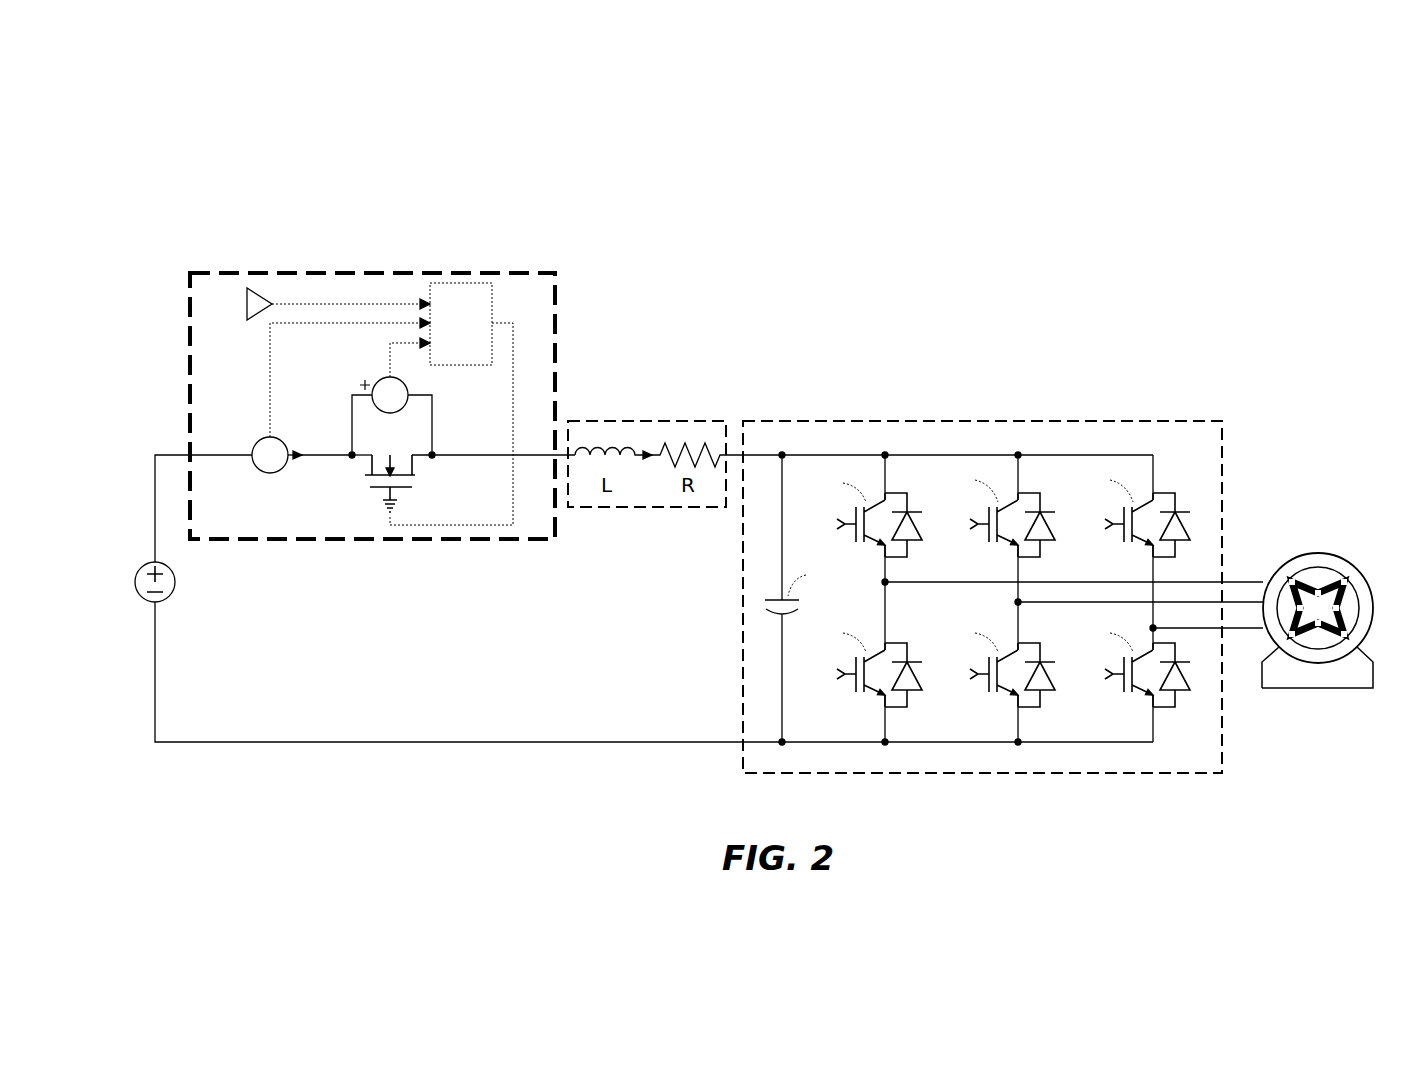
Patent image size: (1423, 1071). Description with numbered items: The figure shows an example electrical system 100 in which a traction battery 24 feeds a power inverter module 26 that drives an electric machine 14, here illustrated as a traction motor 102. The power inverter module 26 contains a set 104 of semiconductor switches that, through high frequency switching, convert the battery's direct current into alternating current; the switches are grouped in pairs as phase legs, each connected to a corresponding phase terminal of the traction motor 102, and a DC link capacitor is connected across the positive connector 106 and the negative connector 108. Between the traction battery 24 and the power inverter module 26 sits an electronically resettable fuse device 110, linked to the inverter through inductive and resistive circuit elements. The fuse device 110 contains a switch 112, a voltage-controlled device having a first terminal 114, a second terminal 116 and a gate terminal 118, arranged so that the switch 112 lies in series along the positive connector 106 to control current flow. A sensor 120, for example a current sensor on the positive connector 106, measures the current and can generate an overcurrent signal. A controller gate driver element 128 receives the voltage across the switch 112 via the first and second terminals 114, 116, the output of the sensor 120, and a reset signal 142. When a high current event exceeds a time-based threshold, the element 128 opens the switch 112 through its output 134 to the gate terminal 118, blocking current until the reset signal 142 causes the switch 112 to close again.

The electrical system 100 is at (160, 124).
The electronically resettable fuse device 110 is at (232, 271).
The reset signal 142 is at (262, 312).
The output 134 is at (493, 323).
The controller gate driver element 128 is at (481, 367).
The sensor 120 is at (264, 471).
The first terminal 114 is at (349, 459).
The second terminal 116 is at (432, 453).
The gate terminal 118 is at (382, 493).
The switch 112 is at (440, 477).
The positive connector 106 is at (172, 453).
The negative connector 108 is at (155, 650).
The traction battery 24 is at (142, 563).
The set of semiconductor switches 104 is at (972, 393).
The power inverter module 26 is at (1080, 394).
The electric machine 14 is at (1333, 578).
The traction motor 102 is at (1350, 561).